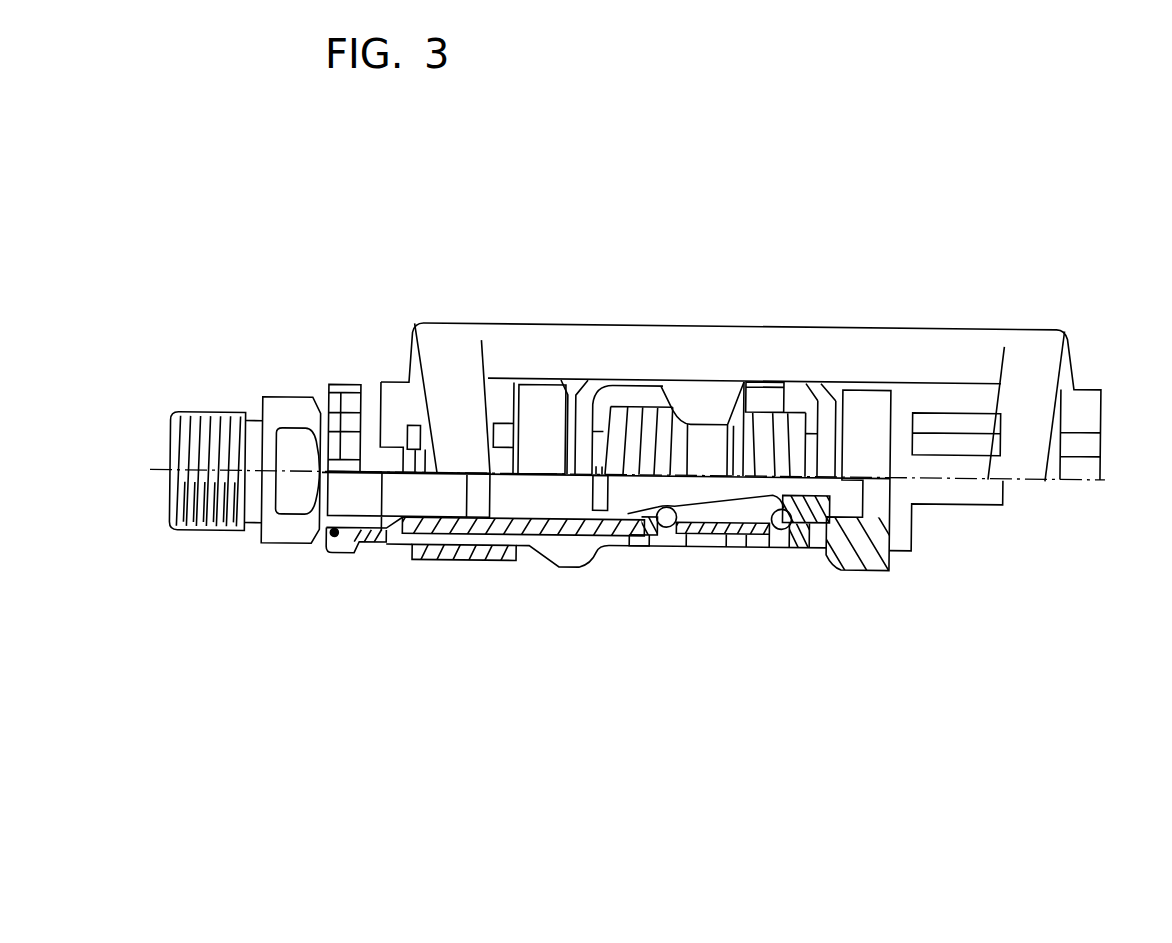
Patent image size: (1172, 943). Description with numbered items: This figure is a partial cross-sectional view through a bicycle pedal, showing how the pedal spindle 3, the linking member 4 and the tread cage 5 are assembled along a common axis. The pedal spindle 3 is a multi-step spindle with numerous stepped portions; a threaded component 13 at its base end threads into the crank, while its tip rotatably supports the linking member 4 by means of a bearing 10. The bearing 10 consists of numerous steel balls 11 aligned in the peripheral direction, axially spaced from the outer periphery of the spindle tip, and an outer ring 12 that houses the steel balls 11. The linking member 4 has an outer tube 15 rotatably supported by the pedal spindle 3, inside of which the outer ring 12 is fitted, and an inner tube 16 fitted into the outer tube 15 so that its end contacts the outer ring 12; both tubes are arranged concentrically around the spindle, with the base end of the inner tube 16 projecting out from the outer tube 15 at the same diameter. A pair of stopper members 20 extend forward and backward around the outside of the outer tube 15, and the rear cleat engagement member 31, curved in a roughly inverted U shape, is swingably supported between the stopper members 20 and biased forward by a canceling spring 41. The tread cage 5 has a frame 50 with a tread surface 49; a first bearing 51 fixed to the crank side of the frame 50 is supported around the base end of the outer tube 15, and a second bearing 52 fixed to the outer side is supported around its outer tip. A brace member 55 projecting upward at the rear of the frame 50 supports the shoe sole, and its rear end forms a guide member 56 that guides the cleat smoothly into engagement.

The pedal spindle 3 is at (290, 409).
The linking member 4 is at (656, 570).
The tread cage 5 is at (587, 311).
The bearing 10 is at (733, 603).
The steel balls 11 is at (800, 652).
The outer ring 12 is at (744, 541).
The threaded component 13 is at (200, 537).
The outer tube 15 is at (605, 560).
The inner tube 16 is at (372, 548).
The stopper members 20 is at (540, 558).
The rear cleat engagement member 31 is at (828, 369).
The canceling spring 41 is at (648, 377).
The tread surface 49 is at (1097, 380).
The frame 50 is at (1030, 389).
The first bearing 51 is at (465, 559).
The second bearing 52 is at (945, 492).
The brace member 55 is at (988, 321).
The guide member 56 is at (912, 322).